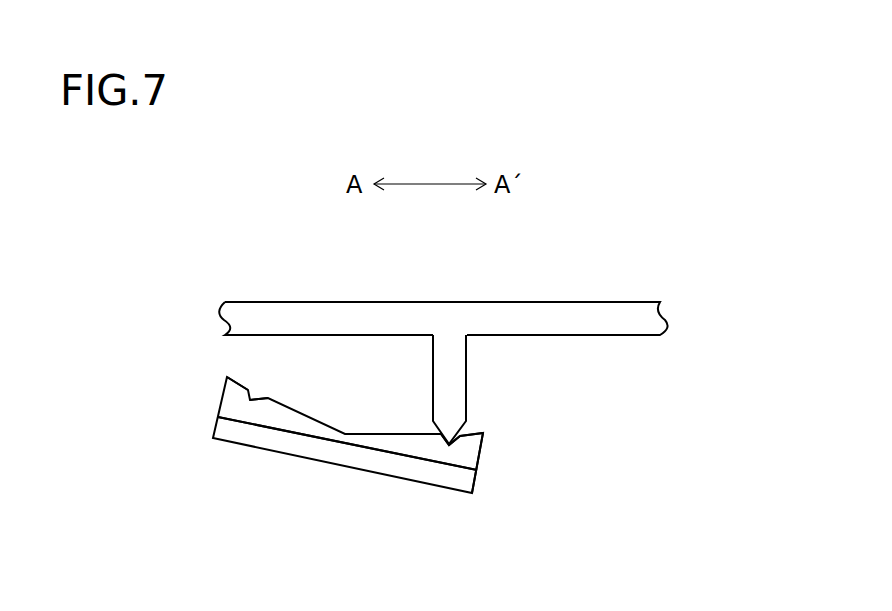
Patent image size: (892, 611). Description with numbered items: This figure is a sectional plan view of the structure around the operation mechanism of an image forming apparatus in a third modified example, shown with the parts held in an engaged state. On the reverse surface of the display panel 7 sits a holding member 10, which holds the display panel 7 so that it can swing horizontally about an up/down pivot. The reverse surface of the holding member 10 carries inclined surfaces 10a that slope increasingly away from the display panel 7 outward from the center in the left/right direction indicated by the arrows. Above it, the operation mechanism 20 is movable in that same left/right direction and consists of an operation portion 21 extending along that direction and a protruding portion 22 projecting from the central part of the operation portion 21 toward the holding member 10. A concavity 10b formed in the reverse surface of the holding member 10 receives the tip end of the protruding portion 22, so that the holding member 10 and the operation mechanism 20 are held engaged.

The display panel 7 is at (340, 457).
The holding member 10 is at (465, 450).
The inclined surface 10a is at (247, 392).
The concavity 10b is at (262, 398).
The operation mechanism 20 is at (443, 332).
The operation portion 21 is at (537, 316).
The protruding portion 22 is at (452, 355).